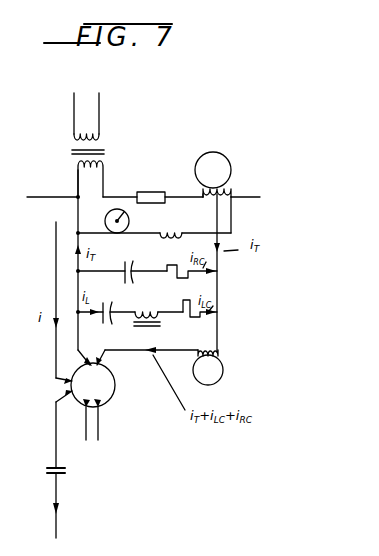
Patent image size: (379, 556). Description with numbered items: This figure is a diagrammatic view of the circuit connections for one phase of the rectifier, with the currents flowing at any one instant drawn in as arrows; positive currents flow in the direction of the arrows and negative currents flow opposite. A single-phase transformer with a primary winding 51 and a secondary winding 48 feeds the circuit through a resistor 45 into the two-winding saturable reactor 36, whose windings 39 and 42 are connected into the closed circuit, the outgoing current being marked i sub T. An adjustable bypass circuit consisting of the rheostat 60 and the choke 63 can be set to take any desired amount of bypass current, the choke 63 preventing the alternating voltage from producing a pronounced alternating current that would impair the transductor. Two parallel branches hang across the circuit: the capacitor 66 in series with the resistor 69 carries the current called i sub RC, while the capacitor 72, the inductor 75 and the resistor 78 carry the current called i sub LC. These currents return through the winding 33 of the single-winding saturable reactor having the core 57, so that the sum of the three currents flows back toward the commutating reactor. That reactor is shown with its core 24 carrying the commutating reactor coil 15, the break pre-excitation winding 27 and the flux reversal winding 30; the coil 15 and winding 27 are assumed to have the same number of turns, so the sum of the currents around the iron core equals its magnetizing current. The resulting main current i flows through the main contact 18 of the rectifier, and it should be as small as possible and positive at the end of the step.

The commutating reactor coil 15 is at (70, 386).
The main contact 18 is at (70, 477).
The core 24 is at (116, 393).
The break pre-excitation winding 27 is at (101, 347).
The flux reversal winding 30 is at (95, 430).
The winding 33 is at (209, 353).
The two-winding saturable reactor 36 is at (220, 146).
The winding 39 is at (204, 200).
The winding 42 is at (233, 191).
The resistor 45 is at (157, 186).
The secondary winding 48 is at (104, 167).
The primary winding 51 is at (102, 138).
The core 57 is at (224, 373).
The rheostat 60 is at (106, 216).
The choke 63 is at (180, 224).
The capacitor 66 is at (137, 255).
The resistor 69 is at (181, 265).
The capacitor 72 is at (118, 296).
The inductor 75 is at (157, 304).
The resistor 78 is at (192, 295).